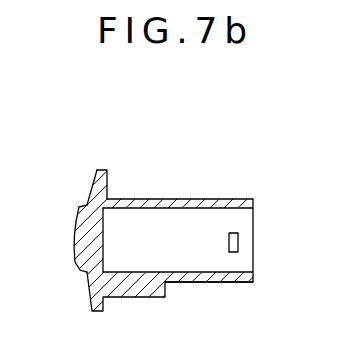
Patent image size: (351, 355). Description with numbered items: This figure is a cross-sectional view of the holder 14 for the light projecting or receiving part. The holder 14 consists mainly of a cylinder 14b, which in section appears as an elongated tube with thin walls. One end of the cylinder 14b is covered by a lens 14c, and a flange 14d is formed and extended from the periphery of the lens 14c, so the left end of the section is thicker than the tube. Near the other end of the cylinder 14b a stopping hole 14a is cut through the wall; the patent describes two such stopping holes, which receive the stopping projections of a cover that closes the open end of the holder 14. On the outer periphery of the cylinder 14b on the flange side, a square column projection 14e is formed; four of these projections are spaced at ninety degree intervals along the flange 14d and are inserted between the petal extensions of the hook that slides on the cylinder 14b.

The holder 14 is at (222, 197).
The stopping hole 14a is at (238, 240).
The cylinder 14b is at (208, 283).
The lens 14c is at (77, 259).
The flange 14d is at (100, 170).
The square column projection 14e is at (138, 298).